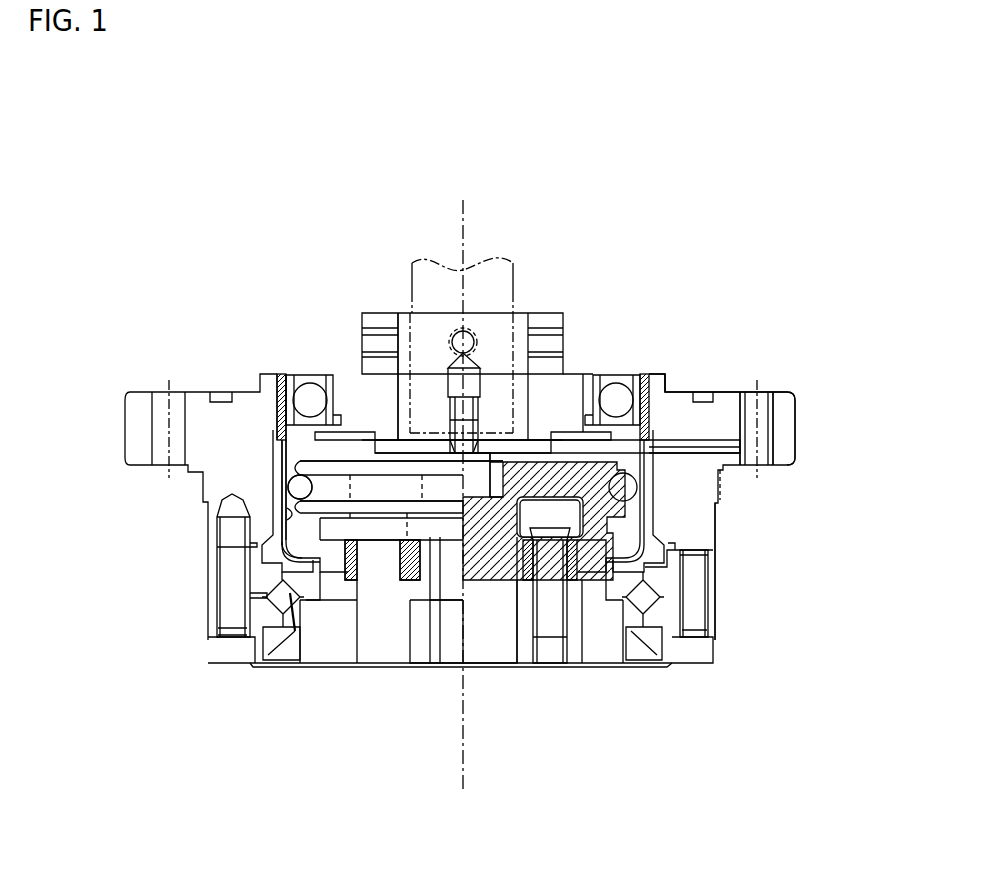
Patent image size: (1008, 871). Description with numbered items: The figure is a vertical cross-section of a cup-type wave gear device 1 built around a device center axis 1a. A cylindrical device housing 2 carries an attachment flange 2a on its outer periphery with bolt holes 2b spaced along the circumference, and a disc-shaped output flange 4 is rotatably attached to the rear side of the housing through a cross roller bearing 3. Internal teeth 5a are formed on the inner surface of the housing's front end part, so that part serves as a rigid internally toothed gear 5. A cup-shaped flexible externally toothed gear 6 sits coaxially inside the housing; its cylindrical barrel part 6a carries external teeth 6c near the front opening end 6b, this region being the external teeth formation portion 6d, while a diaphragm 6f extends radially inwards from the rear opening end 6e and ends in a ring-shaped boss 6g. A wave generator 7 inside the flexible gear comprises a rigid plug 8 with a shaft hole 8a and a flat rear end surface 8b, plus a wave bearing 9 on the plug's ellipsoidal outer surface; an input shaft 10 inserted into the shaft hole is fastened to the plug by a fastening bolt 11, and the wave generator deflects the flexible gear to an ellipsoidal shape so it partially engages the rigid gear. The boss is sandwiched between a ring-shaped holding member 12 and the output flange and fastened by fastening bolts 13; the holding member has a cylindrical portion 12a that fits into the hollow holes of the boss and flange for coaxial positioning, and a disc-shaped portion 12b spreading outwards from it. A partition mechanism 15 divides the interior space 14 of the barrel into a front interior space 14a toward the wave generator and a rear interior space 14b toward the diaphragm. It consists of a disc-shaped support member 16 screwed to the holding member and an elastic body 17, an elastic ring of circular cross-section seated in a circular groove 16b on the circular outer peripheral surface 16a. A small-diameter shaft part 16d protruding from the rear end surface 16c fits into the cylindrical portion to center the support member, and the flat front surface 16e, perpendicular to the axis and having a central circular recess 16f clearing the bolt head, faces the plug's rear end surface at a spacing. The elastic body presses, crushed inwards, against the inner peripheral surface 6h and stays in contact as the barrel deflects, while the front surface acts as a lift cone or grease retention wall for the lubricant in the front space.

The cup-type wave gear device 1 is at (622, 252).
The device center axis 1a is at (463, 745).
The device housing 2 is at (732, 487).
The attachment flange 2a is at (785, 410).
The bolt holes 2b is at (767, 392).
The cross roller bearing 3 is at (670, 552).
The output flange 4 is at (597, 678).
The rigid internally toothed gear 5 is at (762, 396).
The internal teeth 5a is at (644, 395).
The flexible externally toothed gear 6 is at (645, 497).
The cylindrical barrel part 6a is at (280, 467).
The front opening end 6b is at (283, 374).
The external teeth 6c is at (278, 395).
The external teeth formation portion 6d is at (283, 412).
The rear opening end 6e is at (285, 540).
The diaphragm 6f is at (285, 562).
The boss 6g is at (333, 577).
The inner peripheral surface 6h is at (300, 536).
The wave generator 7 is at (585, 372).
The rigid plug 8 is at (555, 345).
The shaft hole 8a is at (492, 392).
The rear end surface 8b is at (665, 408).
The wave bearing 9 is at (612, 374).
The input shaft 10 is at (408, 286).
The fastening bolt 11 is at (478, 362).
The holding member 12 is at (375, 762).
The cylindrical portion 12a is at (413, 587).
The disc-shaped portion 12b is at (387, 575).
The fastening bolts 13 is at (557, 607).
The interior space 14 is at (85, 482).
The front interior space 14a is at (303, 448).
The rear interior space 14b is at (282, 543).
The partition mechanism 15 is at (858, 556).
The support member 16 is at (725, 593).
The circular outer peripheral surface 16a is at (690, 475).
The circular groove 16b is at (655, 493).
The rear end surface 16c is at (440, 582).
The small-diameter shaft part 16d is at (478, 572).
The front surface 16e is at (742, 452).
The circular recess 16f is at (587, 368).
The elastic body 17 is at (690, 552).